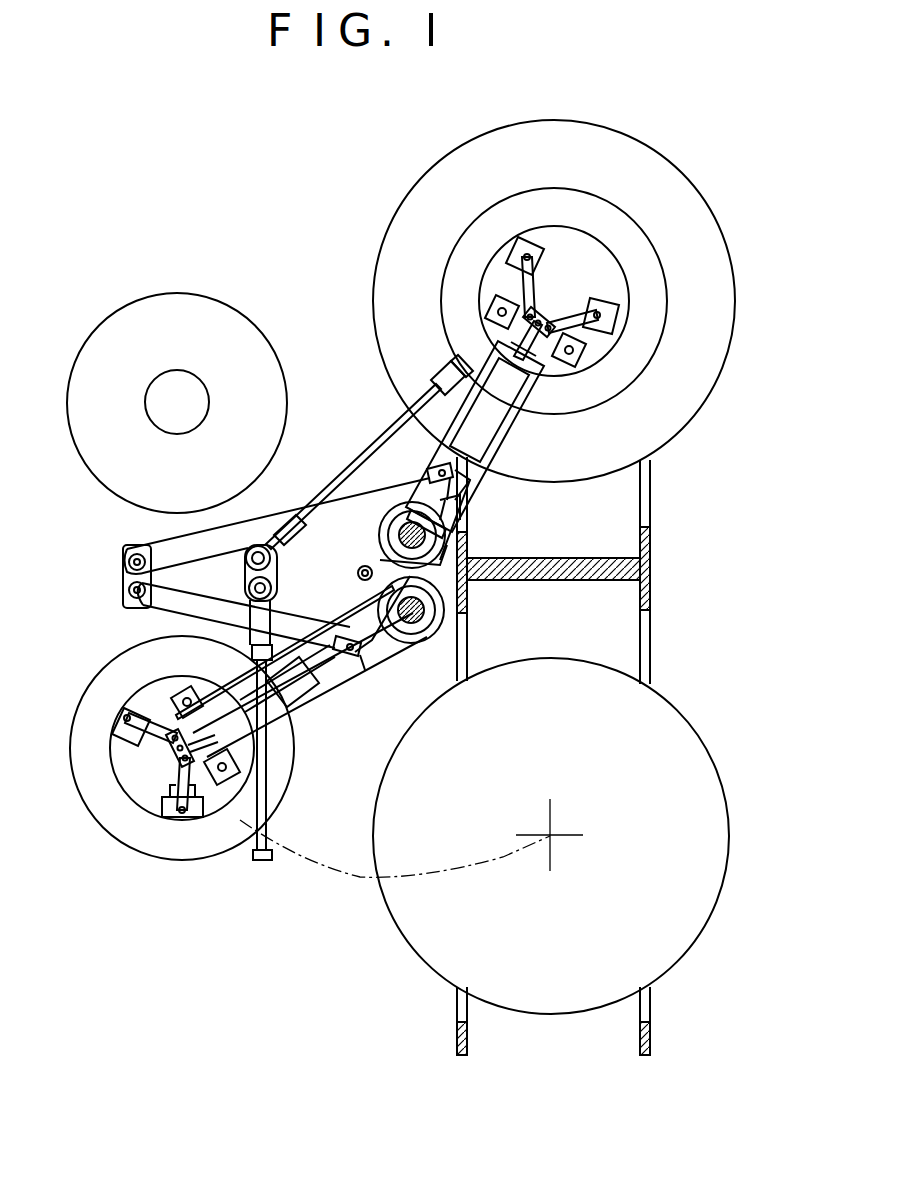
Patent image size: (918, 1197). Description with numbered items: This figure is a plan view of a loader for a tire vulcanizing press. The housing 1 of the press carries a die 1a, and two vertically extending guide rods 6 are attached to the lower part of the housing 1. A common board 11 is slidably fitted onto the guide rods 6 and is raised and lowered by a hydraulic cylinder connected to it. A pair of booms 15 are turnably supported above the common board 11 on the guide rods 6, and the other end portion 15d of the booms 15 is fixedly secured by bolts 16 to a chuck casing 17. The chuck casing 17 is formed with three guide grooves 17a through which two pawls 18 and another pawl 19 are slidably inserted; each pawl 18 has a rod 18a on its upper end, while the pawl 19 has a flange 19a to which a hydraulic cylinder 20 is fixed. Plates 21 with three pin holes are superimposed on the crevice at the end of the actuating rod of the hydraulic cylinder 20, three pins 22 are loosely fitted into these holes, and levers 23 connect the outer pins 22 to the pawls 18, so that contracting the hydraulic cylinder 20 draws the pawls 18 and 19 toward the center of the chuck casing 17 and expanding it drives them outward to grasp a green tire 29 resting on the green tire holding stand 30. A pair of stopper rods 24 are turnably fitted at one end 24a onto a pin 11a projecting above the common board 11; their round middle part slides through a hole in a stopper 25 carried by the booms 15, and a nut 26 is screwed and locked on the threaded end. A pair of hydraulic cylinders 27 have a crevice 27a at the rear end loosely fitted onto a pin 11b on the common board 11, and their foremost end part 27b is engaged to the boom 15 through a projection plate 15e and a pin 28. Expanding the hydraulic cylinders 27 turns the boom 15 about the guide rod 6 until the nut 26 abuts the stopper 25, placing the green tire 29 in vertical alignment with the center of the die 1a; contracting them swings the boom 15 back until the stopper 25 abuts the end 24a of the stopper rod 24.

The housing 1 is at (652, 572).
The die 1a is at (736, 300).
The guide rods 6 is at (405, 537).
The common board 11 is at (433, 643).
The pin 11a is at (262, 545).
The pin 11b is at (123, 592).
The booms 15 is at (500, 430).
The other end portion of the booms 15d is at (492, 305).
The projection plate 15e is at (465, 527).
The bolts 16 is at (567, 362).
The chuck casing 17 is at (603, 343).
The guide grooves 17a is at (541, 236).
The pawls 18 is at (533, 243).
The rod 18a is at (128, 710).
The pawl 19 is at (220, 700).
The flange 19a is at (240, 772).
The hydraulic cylinder 20 is at (290, 688).
The plates 21 is at (545, 320).
The pins 22 is at (170, 745).
The levers 23 is at (178, 777).
The stopper rods 24 is at (360, 458).
The one end of the stopper rods 24a is at (262, 625).
The stopper 25 is at (440, 375).
The nut 26 is at (447, 365).
The hydraulic cylinders 27 is at (203, 537).
The crevice 27a is at (125, 548).
The foremost end part 27b is at (428, 472).
The pin 28 is at (468, 490).
The green tire 29 is at (650, 243).
The green tire holding stand 30 is at (277, 350).